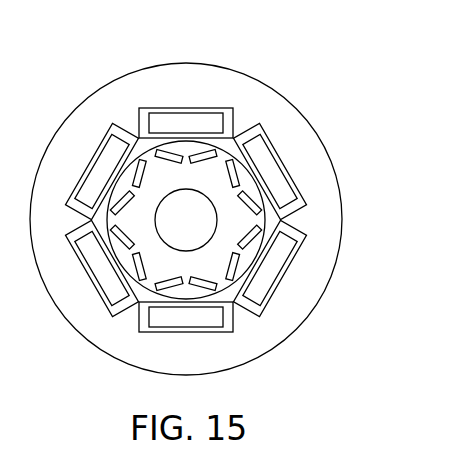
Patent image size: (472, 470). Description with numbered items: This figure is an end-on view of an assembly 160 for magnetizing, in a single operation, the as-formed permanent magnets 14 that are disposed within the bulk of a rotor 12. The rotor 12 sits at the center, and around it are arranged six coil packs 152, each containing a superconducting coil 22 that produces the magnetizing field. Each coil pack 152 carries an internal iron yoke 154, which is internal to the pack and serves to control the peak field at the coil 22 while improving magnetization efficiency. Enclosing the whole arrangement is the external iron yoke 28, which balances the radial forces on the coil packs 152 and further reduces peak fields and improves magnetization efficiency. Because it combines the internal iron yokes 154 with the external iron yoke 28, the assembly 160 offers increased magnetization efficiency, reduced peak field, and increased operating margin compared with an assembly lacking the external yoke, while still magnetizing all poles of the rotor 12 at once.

The assembly 160 is at (223, 199).
The external iron yoke 28 is at (266, 87).
The coil 22 is at (170, 178).
The coil pack 152 is at (164, 110).
The internal iron yoke 154 is at (210, 122).
The rotor 12 is at (244, 206).
The permanent magnet 14 is at (253, 200).